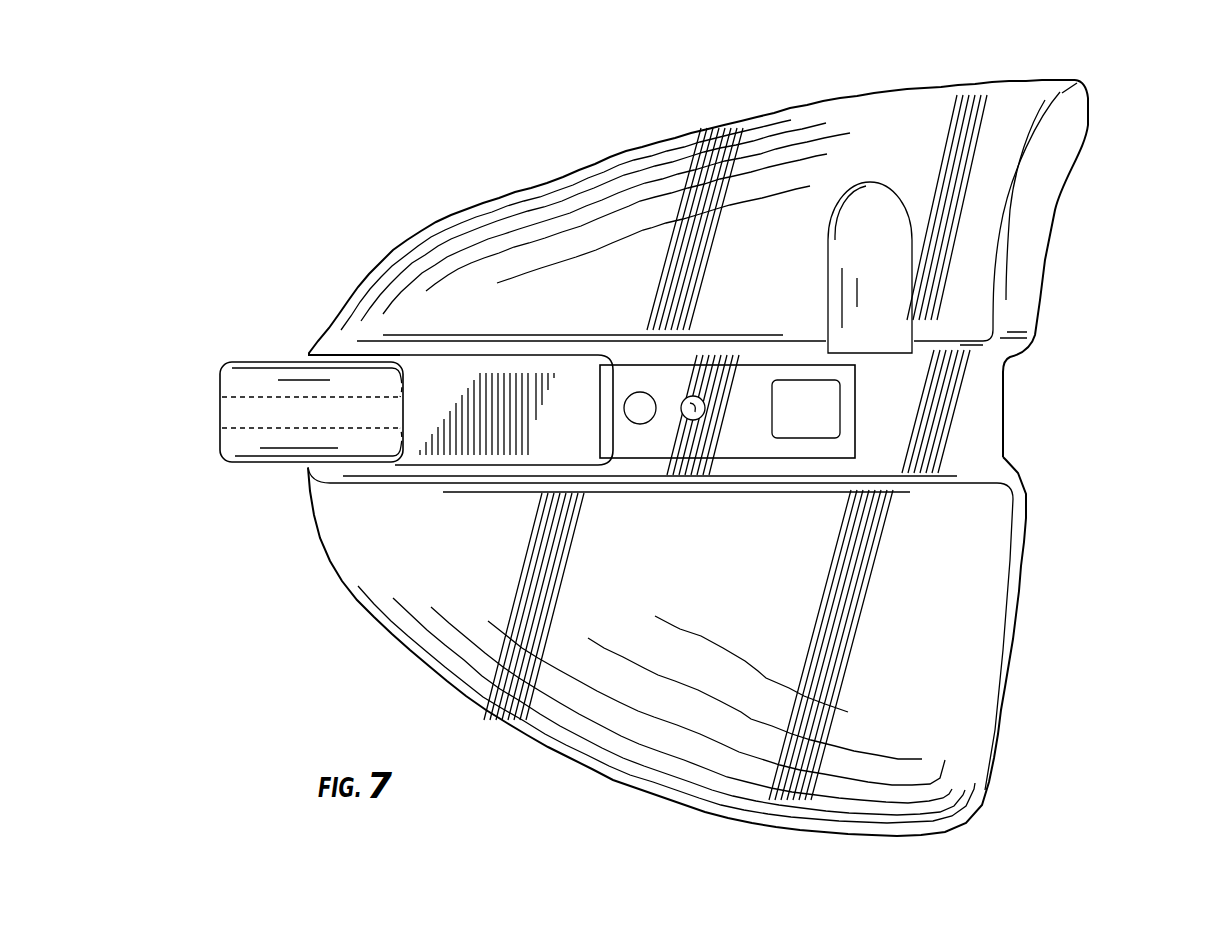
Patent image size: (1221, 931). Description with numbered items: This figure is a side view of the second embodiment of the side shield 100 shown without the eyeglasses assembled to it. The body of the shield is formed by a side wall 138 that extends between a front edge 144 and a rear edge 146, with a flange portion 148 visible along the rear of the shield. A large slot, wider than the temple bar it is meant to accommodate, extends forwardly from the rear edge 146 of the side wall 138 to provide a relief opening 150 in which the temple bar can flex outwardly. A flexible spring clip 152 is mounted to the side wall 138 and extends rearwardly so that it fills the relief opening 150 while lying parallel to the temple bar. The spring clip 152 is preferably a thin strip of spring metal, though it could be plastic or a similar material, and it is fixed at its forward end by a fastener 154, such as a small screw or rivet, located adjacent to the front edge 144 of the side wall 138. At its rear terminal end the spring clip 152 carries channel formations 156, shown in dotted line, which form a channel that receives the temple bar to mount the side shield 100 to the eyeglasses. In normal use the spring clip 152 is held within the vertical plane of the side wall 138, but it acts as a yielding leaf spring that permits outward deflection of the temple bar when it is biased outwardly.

The side shield 100 is at (581, 202).
The side wall 138 is at (527, 247).
The front edge 144 is at (1060, 83).
The rear edge 146 is at (308, 531).
The housing end flange 148 is at (1077, 110).
The relief opening 150 is at (466, 360).
The spring clip 152 is at (540, 375).
The fastener 154 is at (694, 396).
The channel formations 156 is at (279, 371).